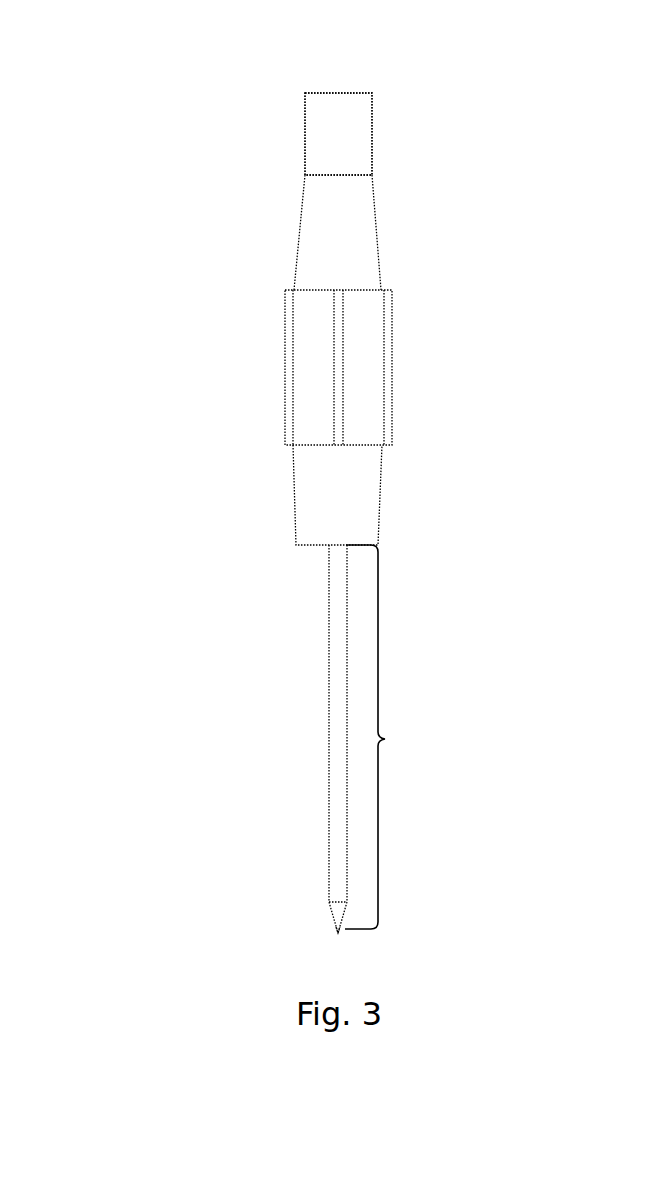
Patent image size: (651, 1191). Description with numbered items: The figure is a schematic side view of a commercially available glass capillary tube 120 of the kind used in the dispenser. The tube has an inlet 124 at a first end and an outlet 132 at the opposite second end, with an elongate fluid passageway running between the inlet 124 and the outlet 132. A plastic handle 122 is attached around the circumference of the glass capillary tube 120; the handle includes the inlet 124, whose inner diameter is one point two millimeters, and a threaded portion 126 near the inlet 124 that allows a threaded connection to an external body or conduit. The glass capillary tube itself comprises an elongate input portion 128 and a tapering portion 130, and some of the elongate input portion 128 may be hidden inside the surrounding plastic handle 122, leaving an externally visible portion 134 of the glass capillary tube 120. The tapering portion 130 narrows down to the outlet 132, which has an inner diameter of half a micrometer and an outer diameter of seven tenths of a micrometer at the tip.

The glass capillary tube 120 is at (168, 110).
The plastic handle 122 is at (276, 339).
The inlet 124 is at (337, 84).
The threaded portion 126 is at (381, 137).
The elongate input portion 128 is at (319, 675).
The tapering portion 130 is at (319, 916).
The outlet 132 is at (326, 938).
The externally visible portion 134 is at (418, 739).